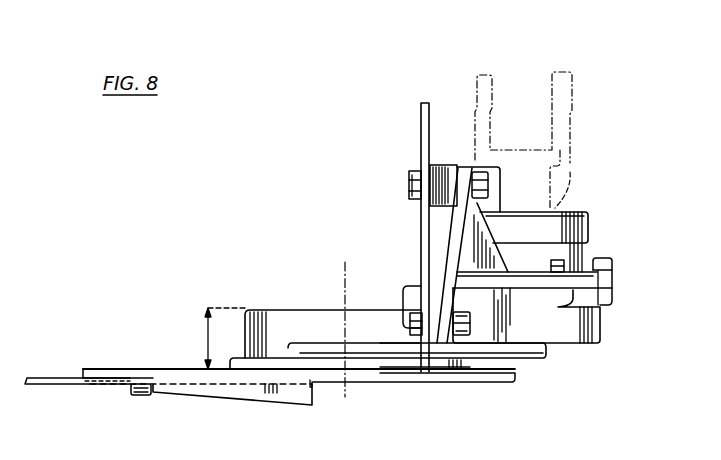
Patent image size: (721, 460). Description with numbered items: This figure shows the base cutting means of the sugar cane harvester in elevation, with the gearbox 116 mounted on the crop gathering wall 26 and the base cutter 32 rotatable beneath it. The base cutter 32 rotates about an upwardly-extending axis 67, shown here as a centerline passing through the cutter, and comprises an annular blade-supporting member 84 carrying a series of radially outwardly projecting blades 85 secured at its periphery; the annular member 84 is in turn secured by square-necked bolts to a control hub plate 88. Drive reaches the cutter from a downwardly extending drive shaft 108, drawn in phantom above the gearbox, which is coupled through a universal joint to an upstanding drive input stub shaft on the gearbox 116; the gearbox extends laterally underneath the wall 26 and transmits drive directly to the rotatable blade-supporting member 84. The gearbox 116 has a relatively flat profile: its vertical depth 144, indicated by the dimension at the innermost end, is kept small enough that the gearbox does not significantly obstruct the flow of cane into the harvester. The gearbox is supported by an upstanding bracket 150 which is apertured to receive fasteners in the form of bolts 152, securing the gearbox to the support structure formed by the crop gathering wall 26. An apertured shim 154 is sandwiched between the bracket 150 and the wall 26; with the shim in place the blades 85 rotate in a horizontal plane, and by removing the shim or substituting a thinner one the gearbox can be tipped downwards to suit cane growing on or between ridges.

The crop gathering wall 26 is at (420, 130).
The base cutter 32 is at (198, 340).
The upwardly-extending axis 67 is at (347, 279).
The annular blade-supporting member 84 is at (97, 369).
The blade 85 is at (44, 378).
The control hub plate 88 is at (238, 387).
The drive shaft 108 is at (572, 156).
The gearbox 116 is at (580, 208).
The vertical depth 144 is at (222, 308).
The upstanding bracket 150 is at (463, 170).
The bolt 152 is at (409, 183).
The shim 154 is at (440, 166).